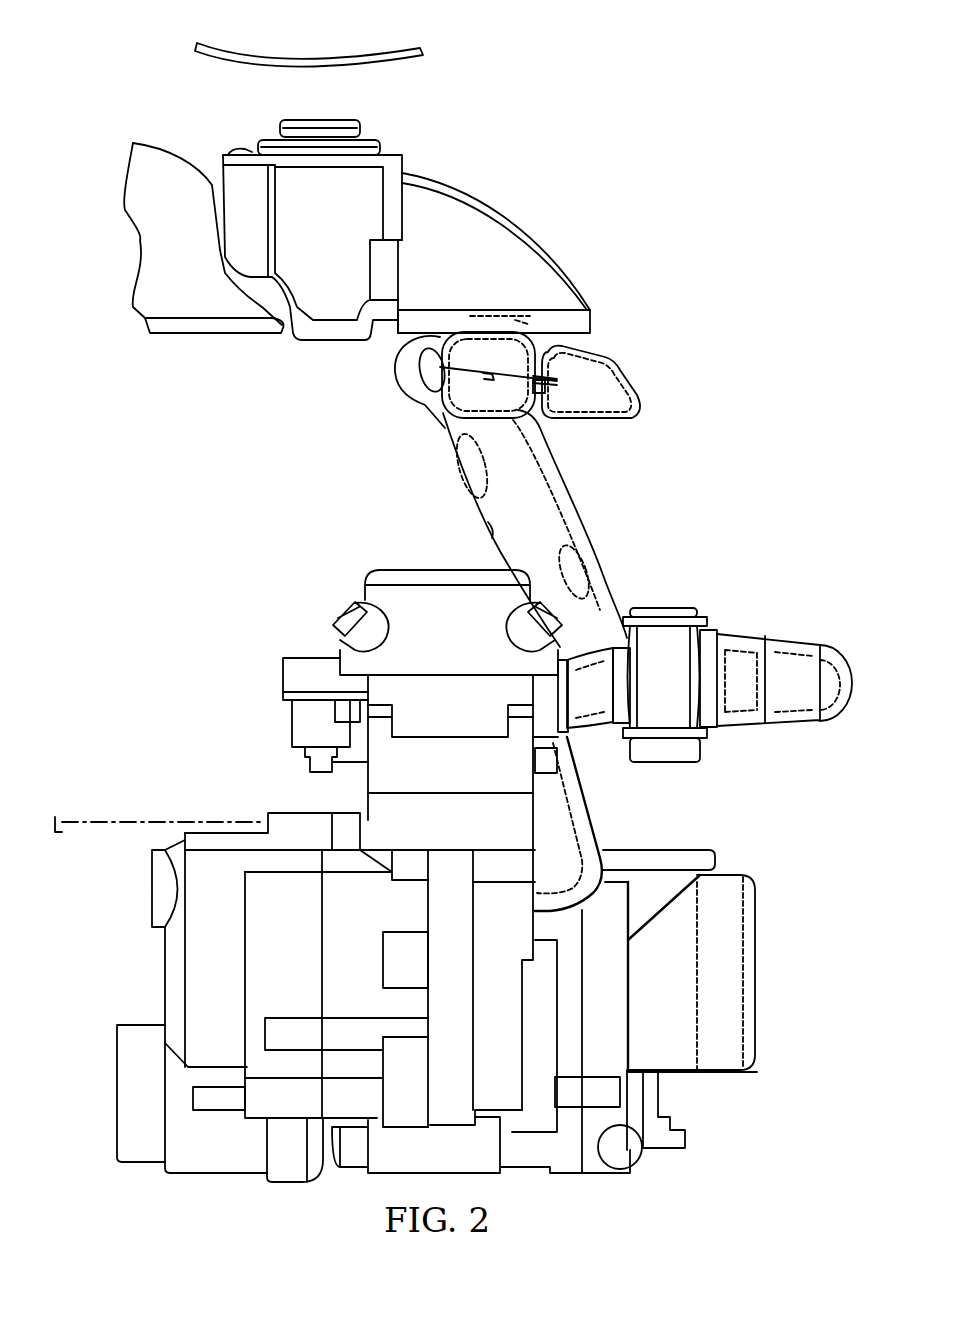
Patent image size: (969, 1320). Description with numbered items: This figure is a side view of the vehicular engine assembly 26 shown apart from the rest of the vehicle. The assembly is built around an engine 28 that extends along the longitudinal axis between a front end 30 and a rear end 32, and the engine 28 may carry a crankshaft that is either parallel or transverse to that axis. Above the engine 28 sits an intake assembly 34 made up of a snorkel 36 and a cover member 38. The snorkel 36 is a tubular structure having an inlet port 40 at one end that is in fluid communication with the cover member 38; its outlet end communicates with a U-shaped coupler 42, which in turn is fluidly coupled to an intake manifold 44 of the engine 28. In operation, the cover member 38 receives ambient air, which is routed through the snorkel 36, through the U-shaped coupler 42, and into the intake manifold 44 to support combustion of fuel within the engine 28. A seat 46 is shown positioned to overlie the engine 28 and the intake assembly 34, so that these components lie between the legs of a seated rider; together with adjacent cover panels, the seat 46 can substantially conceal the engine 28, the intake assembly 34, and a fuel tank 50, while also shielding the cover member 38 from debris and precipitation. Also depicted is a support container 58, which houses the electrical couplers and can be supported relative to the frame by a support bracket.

The vehicular engine assembly 26 is at (592, 140).
The engine 28 is at (276, 780).
The front end 30 is at (150, 972).
The rear end 32 is at (770, 970).
The intake assembly 34 is at (642, 320).
The snorkel 36 is at (562, 493).
The cover member 38 is at (550, 268).
The inlet port 40 is at (437, 308).
The U-shaped coupler 42 is at (805, 690).
The intake manifold 44 is at (437, 602).
The seat 46 is at (292, 58).
The fuel tank 50 is at (170, 264).
The support container 58 is at (350, 110).